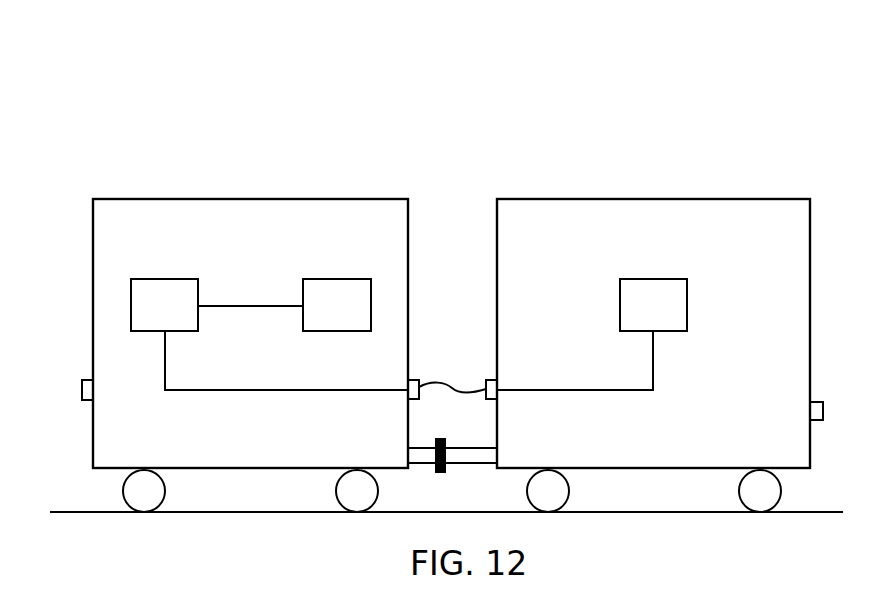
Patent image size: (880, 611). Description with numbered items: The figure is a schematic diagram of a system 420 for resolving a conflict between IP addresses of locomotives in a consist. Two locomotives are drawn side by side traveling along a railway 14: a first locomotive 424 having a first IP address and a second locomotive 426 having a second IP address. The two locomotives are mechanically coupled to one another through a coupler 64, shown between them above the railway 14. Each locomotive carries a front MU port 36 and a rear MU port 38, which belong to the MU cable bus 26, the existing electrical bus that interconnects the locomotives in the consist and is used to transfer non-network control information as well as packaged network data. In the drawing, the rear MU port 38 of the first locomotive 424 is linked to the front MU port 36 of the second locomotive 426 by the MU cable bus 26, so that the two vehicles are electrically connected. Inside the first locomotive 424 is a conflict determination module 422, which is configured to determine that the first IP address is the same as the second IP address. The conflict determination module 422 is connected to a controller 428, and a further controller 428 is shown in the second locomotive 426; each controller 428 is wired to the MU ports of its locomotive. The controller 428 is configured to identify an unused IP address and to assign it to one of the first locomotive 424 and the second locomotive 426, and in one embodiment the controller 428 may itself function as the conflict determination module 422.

The system for resolving a conflict between IP addresses 420 is at (266, 102).
The first locomotive 424 is at (175, 180).
The second locomotive 426 is at (551, 186).
The conflict determination module 422 is at (165, 279).
The controller 428 is at (318, 279).
The front MU port 36 is at (82, 387).
The rear MU port 38 is at (419, 383).
The MU cable bus 26 is at (452, 365).
The coupler 64 is at (472, 456).
The railway 14 is at (84, 511).